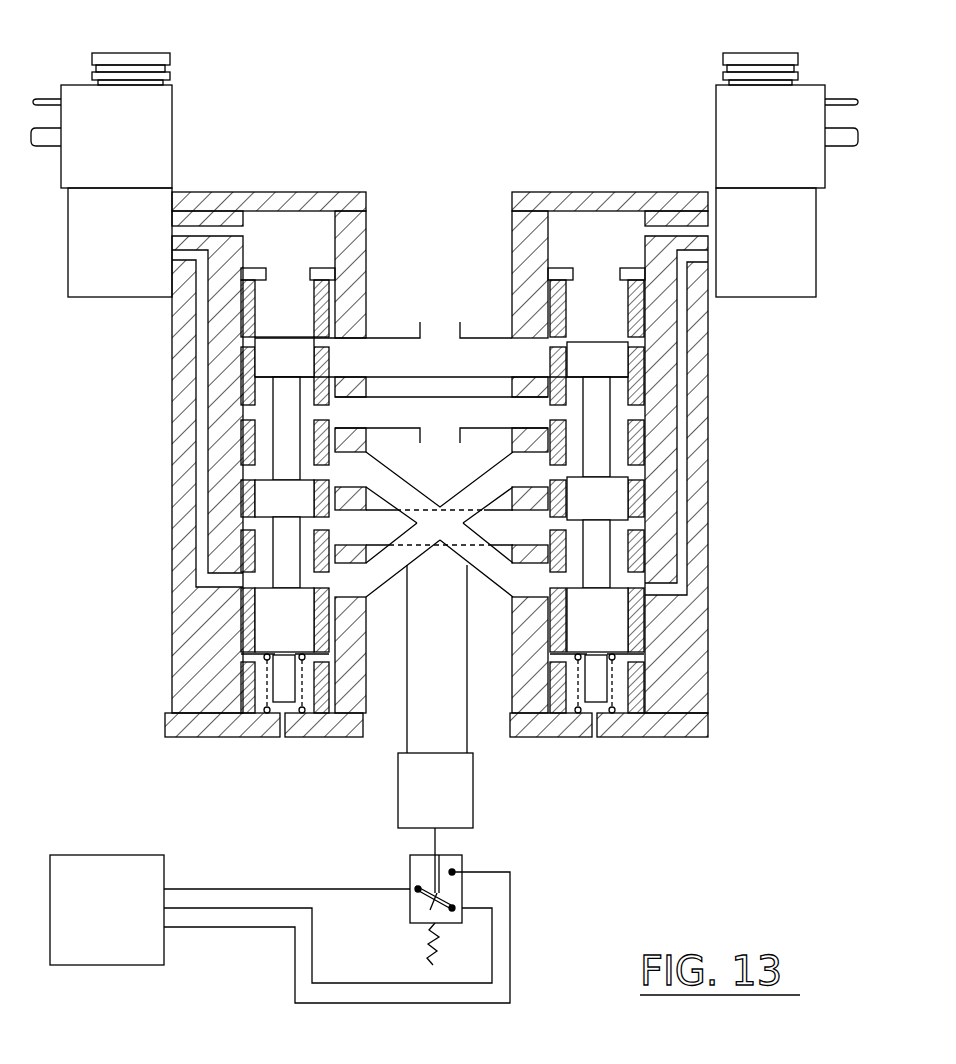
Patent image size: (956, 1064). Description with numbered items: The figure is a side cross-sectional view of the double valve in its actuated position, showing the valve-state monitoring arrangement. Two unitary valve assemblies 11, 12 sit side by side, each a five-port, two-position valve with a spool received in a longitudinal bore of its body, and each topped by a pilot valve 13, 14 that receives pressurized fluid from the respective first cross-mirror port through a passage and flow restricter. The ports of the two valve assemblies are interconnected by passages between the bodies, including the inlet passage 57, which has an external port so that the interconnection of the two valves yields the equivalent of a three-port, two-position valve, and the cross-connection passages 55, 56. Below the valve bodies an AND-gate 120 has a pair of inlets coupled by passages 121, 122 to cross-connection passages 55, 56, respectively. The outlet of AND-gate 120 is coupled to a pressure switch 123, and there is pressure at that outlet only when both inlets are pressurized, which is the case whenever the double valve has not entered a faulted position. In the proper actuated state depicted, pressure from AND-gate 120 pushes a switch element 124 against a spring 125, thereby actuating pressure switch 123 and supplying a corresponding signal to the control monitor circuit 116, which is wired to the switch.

The valve assembly 11 is at (290, 152).
The valve assembly 12 is at (588, 152).
The pilot valve 13 is at (172, 139).
The pilot valve 14 is at (716, 118).
The cross-connection passage 55 is at (388, 578).
The cross-connection passage 56 is at (497, 577).
The inlet passage 57 is at (437, 575).
The control monitor circuit 116 is at (120, 922).
The AND-gate 120 is at (398, 790).
The passage 121 is at (405, 738).
The passage 122 is at (470, 738).
The pressure switch 123 is at (410, 872).
The switch element 124 is at (408, 913).
The spring 125 is at (420, 945).